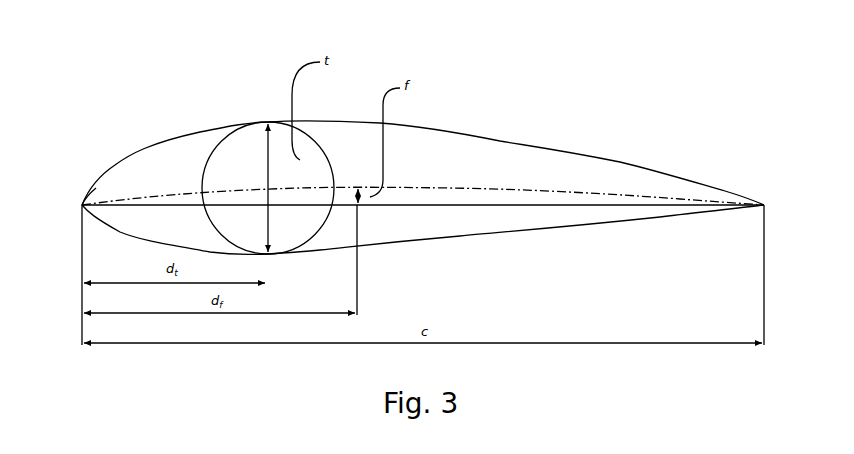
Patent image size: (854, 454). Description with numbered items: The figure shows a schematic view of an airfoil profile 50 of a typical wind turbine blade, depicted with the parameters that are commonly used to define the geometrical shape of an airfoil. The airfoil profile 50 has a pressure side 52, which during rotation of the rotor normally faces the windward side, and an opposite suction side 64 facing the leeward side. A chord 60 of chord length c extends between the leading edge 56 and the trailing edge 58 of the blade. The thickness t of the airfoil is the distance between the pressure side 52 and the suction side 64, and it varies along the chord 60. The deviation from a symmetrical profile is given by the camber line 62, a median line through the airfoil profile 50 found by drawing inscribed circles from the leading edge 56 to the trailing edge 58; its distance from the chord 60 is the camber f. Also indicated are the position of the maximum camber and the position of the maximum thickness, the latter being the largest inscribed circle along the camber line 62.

The airfoil profile 50 is at (423, 142).
The pressure side 52 is at (558, 228).
The leading edge 56 is at (82, 205).
The trailing edge 58 is at (764, 205).
The chord 60 is at (592, 203).
The camber line 62 is at (413, 183).
The suction side (upper surface) 64 is at (504, 141).